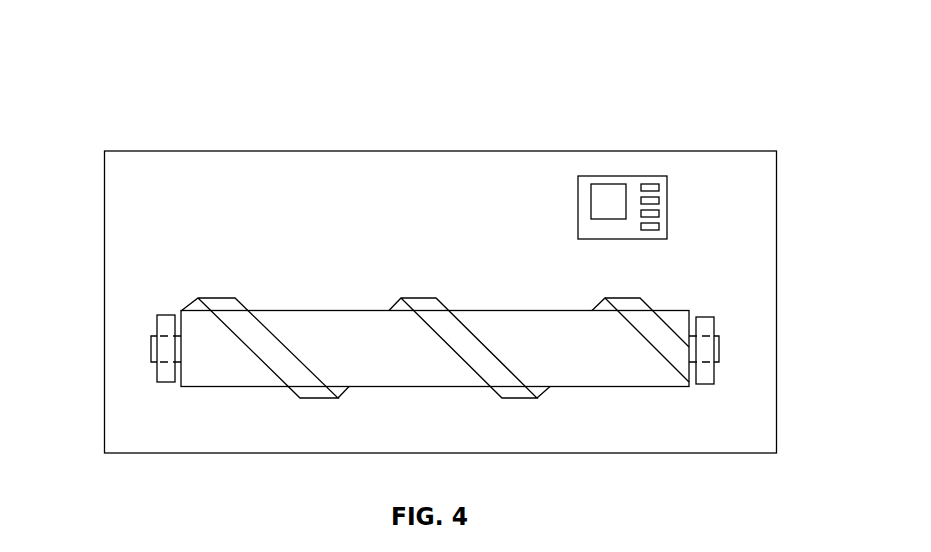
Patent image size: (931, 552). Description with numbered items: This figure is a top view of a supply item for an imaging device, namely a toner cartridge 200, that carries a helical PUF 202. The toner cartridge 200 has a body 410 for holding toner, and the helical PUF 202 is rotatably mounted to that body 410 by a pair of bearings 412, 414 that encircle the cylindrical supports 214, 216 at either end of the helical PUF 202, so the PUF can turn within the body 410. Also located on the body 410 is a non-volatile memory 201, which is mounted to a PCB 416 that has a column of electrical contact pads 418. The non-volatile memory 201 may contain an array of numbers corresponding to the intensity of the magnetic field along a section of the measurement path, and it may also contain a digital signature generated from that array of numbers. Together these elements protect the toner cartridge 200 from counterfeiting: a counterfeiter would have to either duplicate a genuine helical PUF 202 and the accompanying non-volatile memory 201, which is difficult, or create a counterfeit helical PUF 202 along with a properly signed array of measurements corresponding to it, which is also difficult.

The toner cartridge 200 is at (128, 114).
The body 410 is at (104, 182).
The helical PUF 202 is at (298, 310).
The bearing 412 is at (170, 315).
The bearing 414 is at (705, 317).
The cylindrical support 214 is at (151, 350).
The cylindrical support 216 is at (719, 351).
The PCB 416 is at (578, 210).
The non-volatile memory 201 is at (598, 184).
The electrical contact pads 418 is at (652, 183).